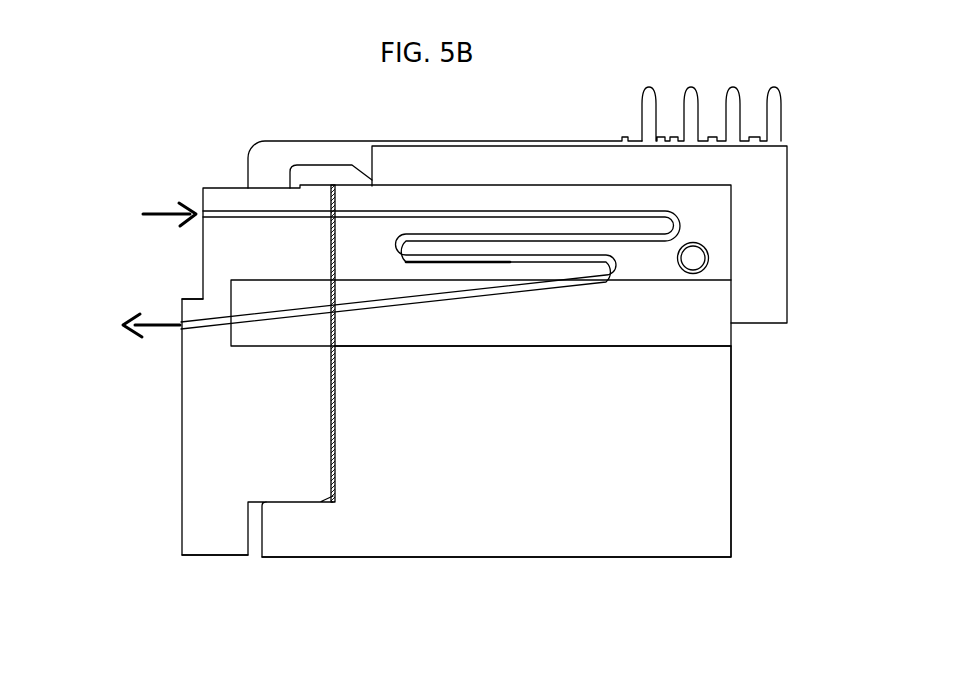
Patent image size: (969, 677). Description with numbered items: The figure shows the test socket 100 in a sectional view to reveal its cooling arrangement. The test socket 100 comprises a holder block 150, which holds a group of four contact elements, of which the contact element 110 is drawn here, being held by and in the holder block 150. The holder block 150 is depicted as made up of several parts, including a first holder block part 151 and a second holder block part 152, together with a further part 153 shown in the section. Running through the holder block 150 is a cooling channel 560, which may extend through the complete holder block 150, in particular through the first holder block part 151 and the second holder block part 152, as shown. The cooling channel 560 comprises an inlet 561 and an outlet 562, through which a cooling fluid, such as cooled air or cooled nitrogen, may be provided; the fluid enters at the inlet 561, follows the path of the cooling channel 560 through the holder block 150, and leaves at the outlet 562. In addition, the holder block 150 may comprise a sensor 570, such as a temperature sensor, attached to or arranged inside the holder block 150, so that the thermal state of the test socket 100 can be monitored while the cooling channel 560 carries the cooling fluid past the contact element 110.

The test socket 100 is at (126, 114).
The contact element 110 is at (275, 162).
The holder block 150 is at (730, 562).
The first holder block part 151 is at (282, 437).
The second holder block part 152 is at (640, 327).
The third body portion 153 is at (609, 437).
The cooling channel 560 is at (681, 229).
The inlet 561 is at (158, 212).
The outlet 562 is at (162, 322).
The sensor 570 is at (693, 257).